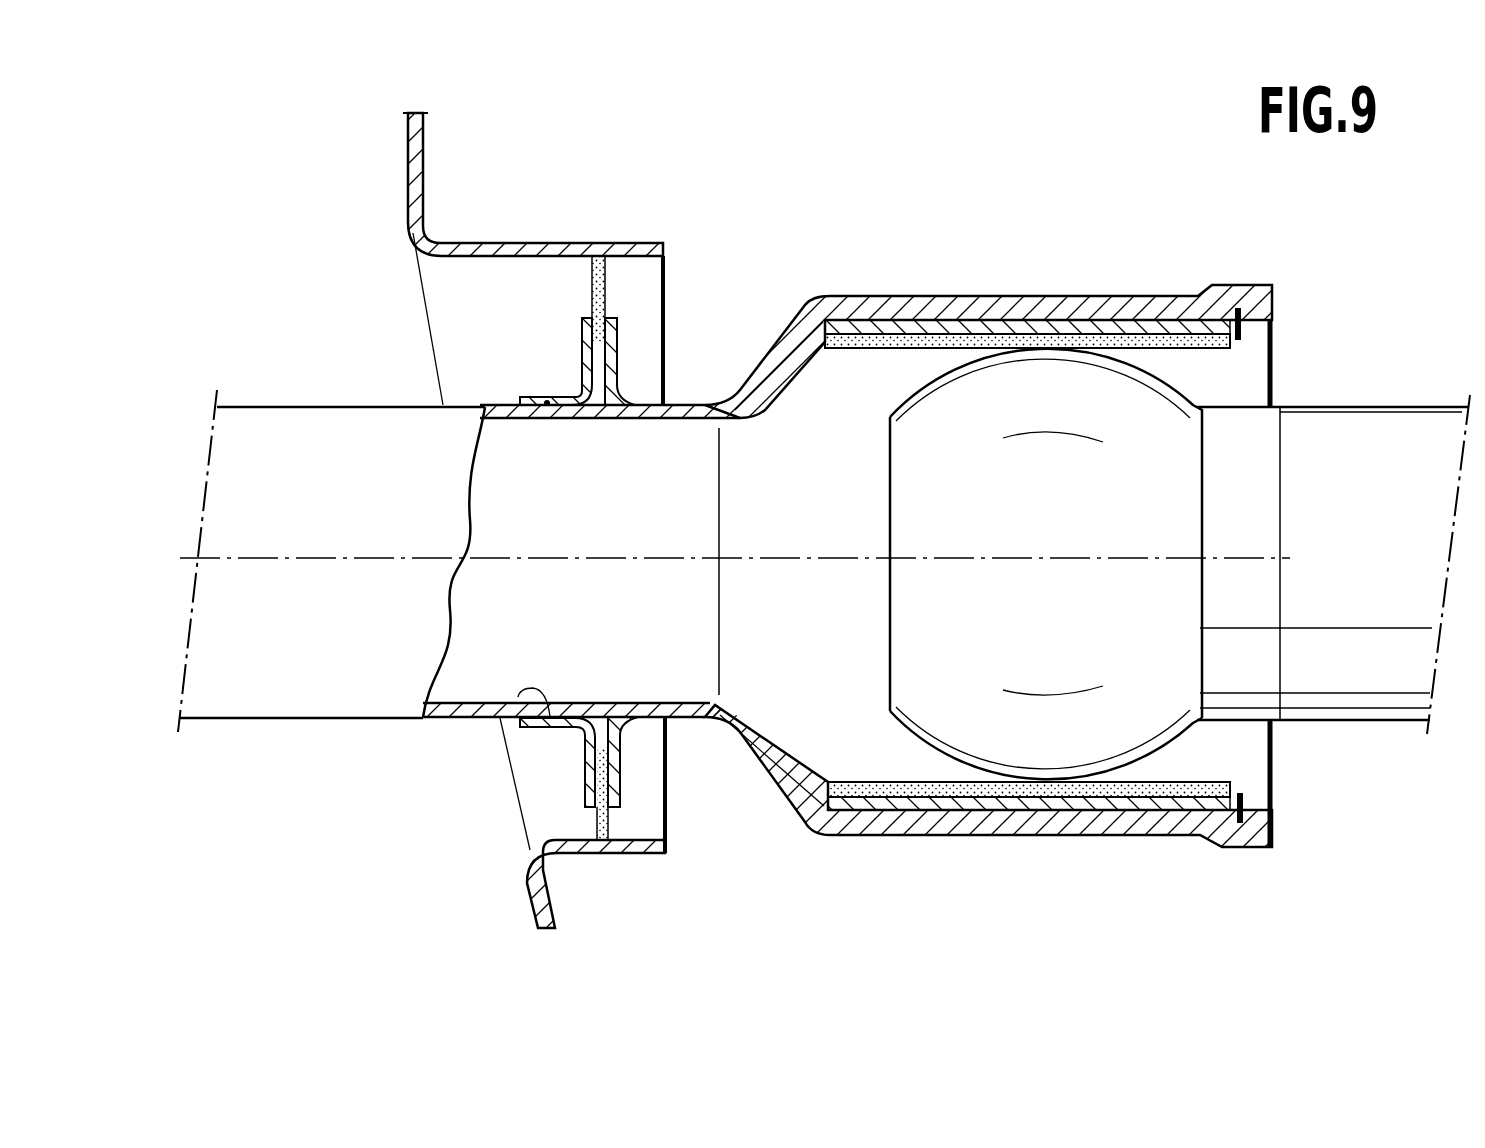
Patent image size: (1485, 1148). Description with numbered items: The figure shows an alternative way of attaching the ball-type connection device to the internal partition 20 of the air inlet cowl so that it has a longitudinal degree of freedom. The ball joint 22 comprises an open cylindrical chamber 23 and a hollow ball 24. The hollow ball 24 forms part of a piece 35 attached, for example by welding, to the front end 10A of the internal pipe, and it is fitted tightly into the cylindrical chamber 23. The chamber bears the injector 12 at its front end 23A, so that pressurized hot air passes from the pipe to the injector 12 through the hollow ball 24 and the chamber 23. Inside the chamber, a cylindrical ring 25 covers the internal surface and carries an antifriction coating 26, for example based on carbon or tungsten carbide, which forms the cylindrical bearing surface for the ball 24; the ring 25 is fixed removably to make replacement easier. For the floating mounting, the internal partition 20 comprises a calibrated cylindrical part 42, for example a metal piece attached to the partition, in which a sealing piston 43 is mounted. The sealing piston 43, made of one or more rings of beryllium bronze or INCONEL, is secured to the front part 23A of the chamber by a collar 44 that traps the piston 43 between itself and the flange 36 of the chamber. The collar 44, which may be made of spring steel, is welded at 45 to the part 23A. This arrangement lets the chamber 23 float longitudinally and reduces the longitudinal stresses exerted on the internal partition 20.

The front end of the pipe 10A is at (1367, 435).
The injector 12 is at (308, 422).
The internal partition 20 is at (418, 160).
The ball joint 22 is at (1024, 510).
The cylindrical chamber 23 is at (1138, 305).
The front end of the cylindrical chamber 23A is at (682, 443).
The hollow ball 24 is at (920, 497).
The cylindrical ring 25 is at (852, 323).
The antifriction coating 26 is at (918, 345).
The piece 35 is at (1238, 677).
The flange 36 is at (603, 340).
The calibrated cylindrical part 42 is at (572, 243).
The sealing piston 43 is at (598, 277).
The collar 44 is at (582, 350).
The weld 45 is at (547, 403).